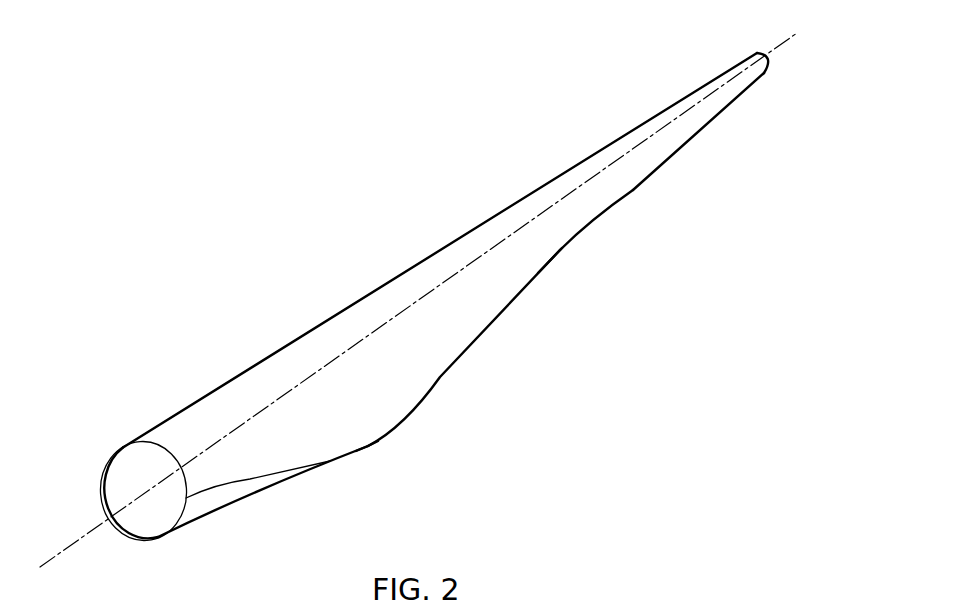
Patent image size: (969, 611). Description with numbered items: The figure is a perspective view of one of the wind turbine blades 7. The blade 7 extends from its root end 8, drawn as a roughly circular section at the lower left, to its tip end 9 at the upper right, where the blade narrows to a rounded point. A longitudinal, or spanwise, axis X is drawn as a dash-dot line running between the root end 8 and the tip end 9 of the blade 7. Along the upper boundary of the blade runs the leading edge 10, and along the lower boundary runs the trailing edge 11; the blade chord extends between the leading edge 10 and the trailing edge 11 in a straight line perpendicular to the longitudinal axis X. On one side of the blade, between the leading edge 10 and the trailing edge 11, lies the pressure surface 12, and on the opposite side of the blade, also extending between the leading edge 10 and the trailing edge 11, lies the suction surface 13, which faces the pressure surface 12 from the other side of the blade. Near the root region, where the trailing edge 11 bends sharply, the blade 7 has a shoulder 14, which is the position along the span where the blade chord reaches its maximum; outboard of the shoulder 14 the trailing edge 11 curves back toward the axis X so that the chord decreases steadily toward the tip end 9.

The blade 7 is at (432, 292).
The root end 8 is at (218, 477).
The tip end 9 is at (712, 84).
The leading edge 10 is at (377, 291).
The trailing edge 11 is at (461, 305).
The pressure surface 12 is at (553, 282).
The suction surface 13 is at (575, 225).
The shoulder 14 is at (371, 457).
The longitudinal axis X is at (70, 543).